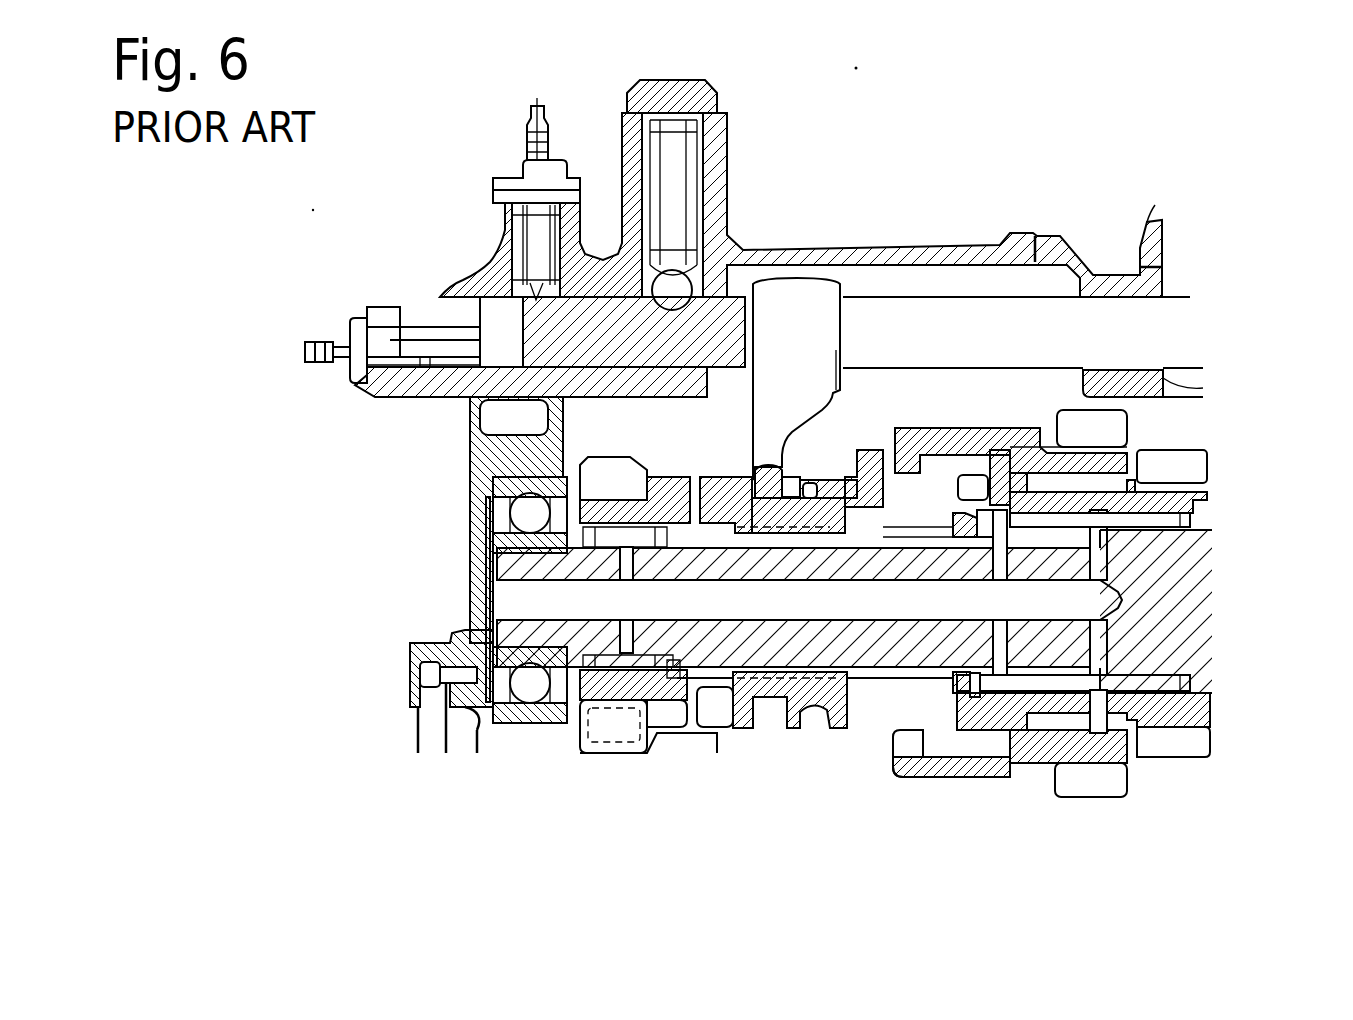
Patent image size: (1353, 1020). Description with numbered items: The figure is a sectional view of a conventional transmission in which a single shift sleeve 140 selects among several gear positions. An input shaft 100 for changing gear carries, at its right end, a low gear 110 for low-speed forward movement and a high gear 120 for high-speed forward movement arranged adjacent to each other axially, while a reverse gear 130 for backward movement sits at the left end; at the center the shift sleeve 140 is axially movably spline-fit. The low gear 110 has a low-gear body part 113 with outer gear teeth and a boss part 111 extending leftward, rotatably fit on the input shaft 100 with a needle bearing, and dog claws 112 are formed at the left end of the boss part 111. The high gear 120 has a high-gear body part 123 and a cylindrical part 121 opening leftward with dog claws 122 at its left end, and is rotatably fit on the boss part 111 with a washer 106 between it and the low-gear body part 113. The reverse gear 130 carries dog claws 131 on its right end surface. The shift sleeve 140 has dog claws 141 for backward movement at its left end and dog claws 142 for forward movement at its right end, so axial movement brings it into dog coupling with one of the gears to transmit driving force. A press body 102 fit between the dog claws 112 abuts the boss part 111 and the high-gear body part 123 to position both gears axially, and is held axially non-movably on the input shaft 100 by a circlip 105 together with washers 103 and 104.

The input shaft 100 is at (1202, 613).
The press body 102 is at (990, 455).
The washer 103 is at (972, 540).
The washer 104 is at (968, 540).
The circlip 105 is at (965, 530).
The washer 106 is at (1138, 480).
The low gear 110 is at (1195, 750).
The boss part 111 is at (1100, 705).
The dog claws 112 is at (958, 487).
The low-gear body part 113 is at (1193, 510).
The high gear 120 is at (1075, 410).
The cylindrical part 121 is at (948, 428).
The dog claws 122 is at (893, 745).
The high-gear body part 123 is at (1048, 745).
The reverse gear 130 is at (608, 457).
The dog claws 131 is at (670, 477).
The shift sleeve 140 is at (757, 728).
The dog claws for backward movement 141 is at (715, 477).
The dog claws for forward movement 142 is at (868, 450).